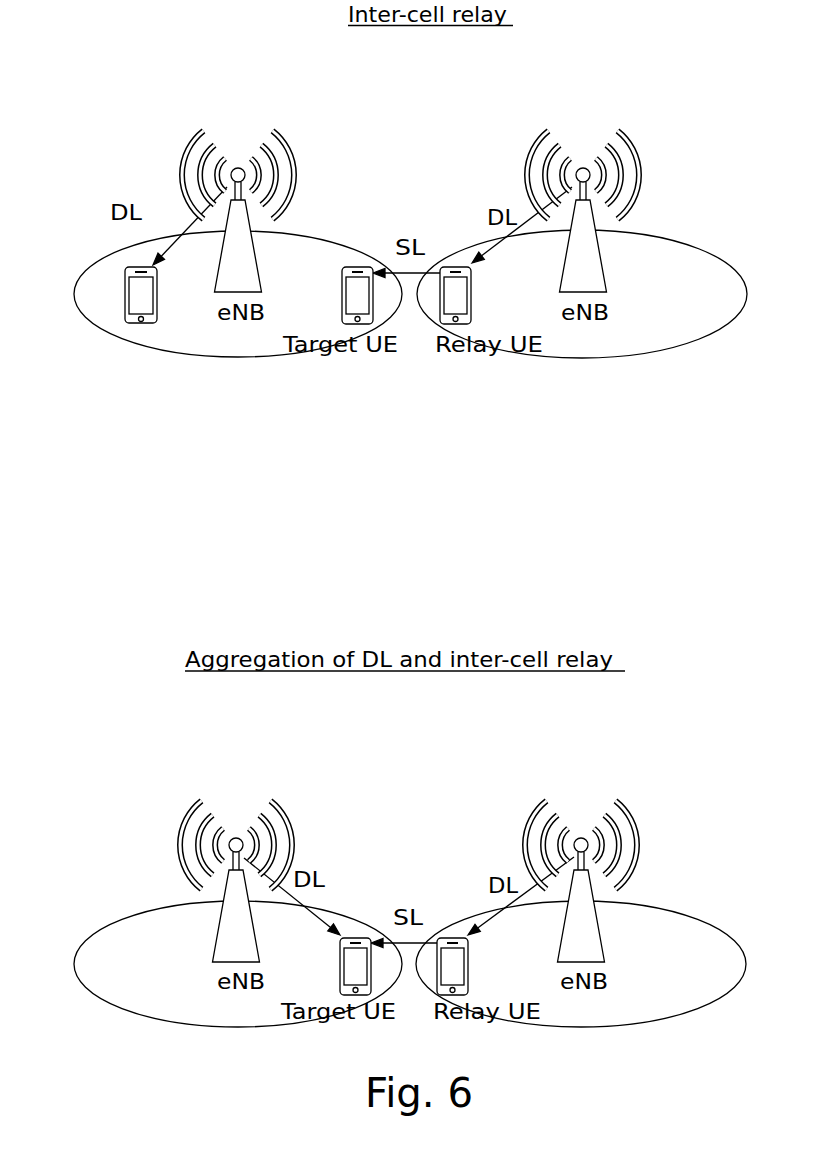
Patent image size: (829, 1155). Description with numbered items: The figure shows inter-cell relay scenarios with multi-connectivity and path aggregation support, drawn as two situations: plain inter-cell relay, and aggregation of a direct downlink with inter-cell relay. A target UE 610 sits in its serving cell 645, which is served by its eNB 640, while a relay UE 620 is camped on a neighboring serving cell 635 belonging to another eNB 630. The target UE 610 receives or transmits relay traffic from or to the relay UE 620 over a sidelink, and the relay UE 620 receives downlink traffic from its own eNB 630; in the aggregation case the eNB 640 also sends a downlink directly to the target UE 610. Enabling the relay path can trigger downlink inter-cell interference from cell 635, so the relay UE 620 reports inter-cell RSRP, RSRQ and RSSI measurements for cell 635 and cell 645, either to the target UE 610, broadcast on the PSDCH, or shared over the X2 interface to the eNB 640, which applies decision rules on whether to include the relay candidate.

The target UE 610 is at (355, 266).
The relay UE 620 is at (450, 266).
The eNB (serving relay UE cell) 630 is at (583, 167).
The serving cell of relay UE 635 is at (581, 628).
The serving eNB of target UE 640 is at (238, 167).
The serving cell of target UE 645 is at (192, 332).